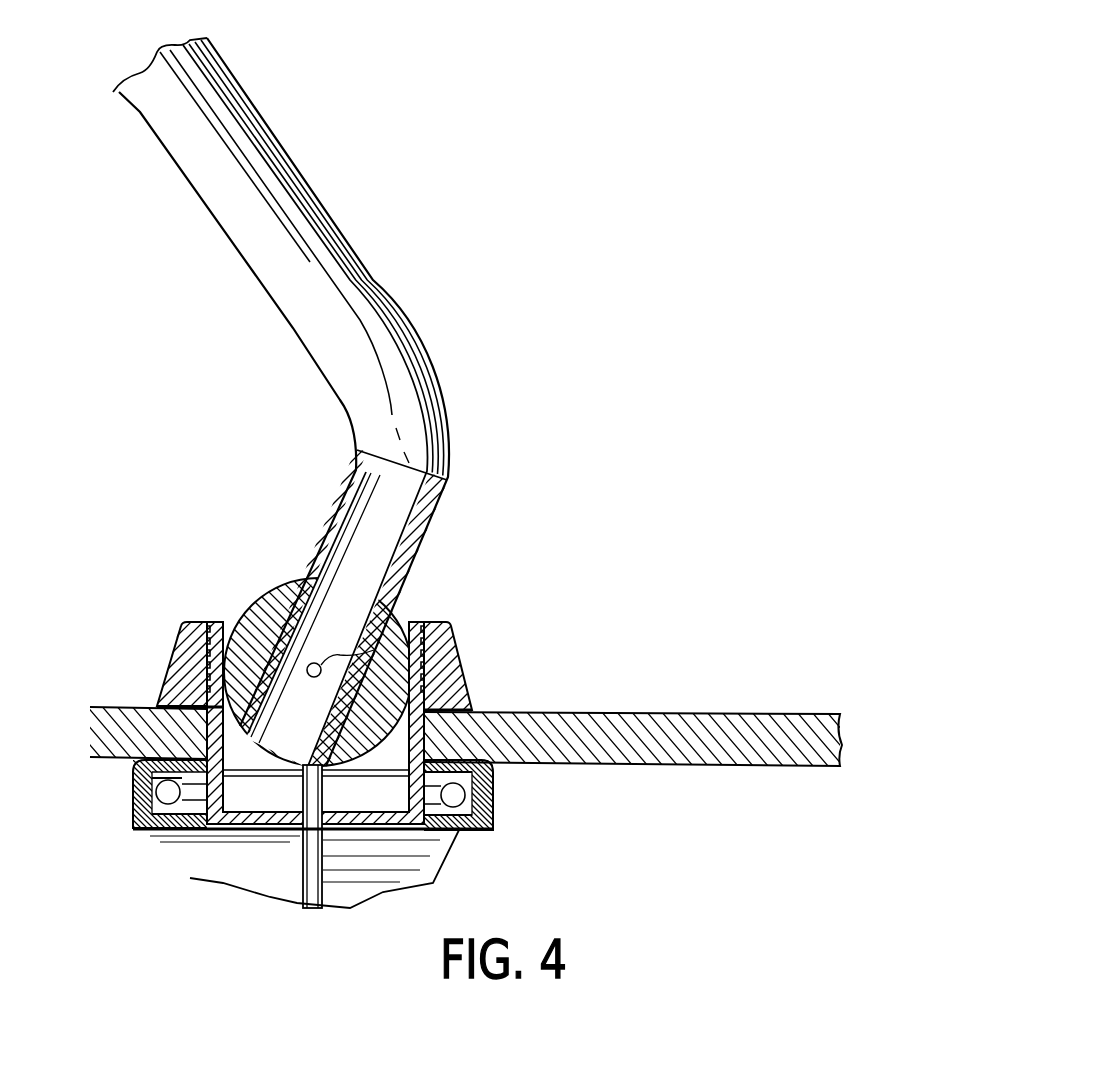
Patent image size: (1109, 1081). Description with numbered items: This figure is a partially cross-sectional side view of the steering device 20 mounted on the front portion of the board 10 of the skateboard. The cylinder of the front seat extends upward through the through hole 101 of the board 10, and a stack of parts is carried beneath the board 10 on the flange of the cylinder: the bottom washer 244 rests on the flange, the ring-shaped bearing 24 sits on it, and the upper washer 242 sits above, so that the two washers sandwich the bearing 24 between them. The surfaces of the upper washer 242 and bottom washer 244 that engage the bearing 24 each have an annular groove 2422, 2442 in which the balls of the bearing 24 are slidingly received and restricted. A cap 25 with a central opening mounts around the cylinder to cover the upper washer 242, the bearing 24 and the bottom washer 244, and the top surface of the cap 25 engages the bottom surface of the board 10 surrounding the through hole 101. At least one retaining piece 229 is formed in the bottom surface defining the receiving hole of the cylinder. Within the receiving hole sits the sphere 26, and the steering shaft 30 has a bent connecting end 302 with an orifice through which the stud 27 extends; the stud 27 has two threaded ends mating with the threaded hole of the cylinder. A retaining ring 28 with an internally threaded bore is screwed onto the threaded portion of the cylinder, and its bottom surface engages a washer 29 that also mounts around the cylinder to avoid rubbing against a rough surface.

The board 10 is at (662, 713).
The through hole 101 is at (458, 706).
The steering device 20 is at (212, 576).
The bearing 24 is at (150, 832).
The annular groove 2422 is at (152, 772).
The annular groove 2442 is at (157, 830).
The bottom washer 244 is at (482, 830).
The upper washer 242 is at (480, 762).
The cap 25 is at (495, 798).
The sphere 26 is at (276, 590).
The stud 27 is at (413, 622).
The retaining ring 28 is at (184, 640).
The washer 29 is at (160, 705).
The retaining piece 229 is at (297, 790).
The steering shaft 30 is at (303, 193).
The connecting end 302 is at (350, 530).